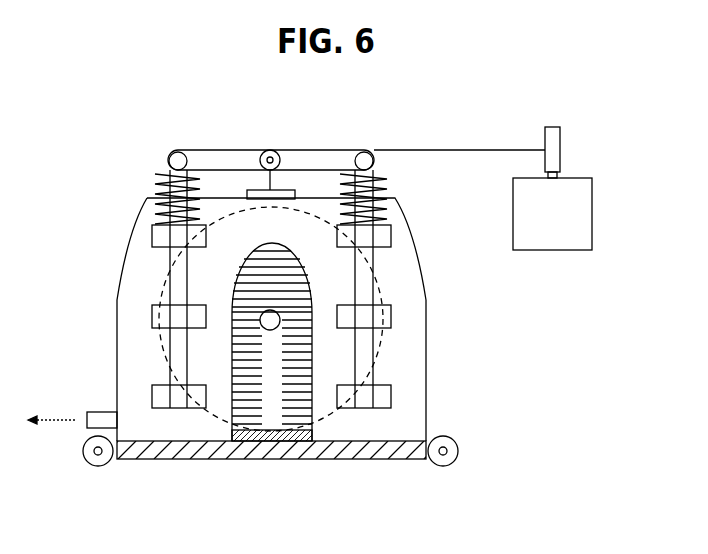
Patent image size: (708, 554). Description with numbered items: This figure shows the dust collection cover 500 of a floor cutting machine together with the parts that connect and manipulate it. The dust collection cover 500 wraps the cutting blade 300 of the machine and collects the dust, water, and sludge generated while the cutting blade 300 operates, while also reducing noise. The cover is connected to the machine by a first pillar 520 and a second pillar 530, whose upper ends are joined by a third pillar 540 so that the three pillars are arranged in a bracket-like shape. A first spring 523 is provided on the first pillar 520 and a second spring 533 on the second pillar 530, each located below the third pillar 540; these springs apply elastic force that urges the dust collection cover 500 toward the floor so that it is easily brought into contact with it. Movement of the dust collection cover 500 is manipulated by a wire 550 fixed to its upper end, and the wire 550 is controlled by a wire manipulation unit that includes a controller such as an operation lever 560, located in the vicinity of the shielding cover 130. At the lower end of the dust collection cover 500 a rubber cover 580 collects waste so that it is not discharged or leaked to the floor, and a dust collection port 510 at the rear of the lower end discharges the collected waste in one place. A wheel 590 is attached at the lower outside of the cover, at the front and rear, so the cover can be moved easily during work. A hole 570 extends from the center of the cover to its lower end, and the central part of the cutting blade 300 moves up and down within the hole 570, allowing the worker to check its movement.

The shielding cover 130 is at (593, 205).
The cutting blade 300 is at (388, 332).
The dust collection cover 500 is at (123, 252).
The dust collection port 510 is at (98, 412).
The first pillar 520 is at (172, 157).
The first spring 523 is at (157, 183).
The second pillar 530 is at (385, 150).
The second spring 533 is at (389, 184).
The third pillar 540 is at (222, 149).
The wire 550 is at (478, 150).
The operation lever 560 is at (562, 137).
The hole 570 is at (257, 442).
The rubber cover 580 is at (166, 460).
The wheel 590 is at (97, 467).